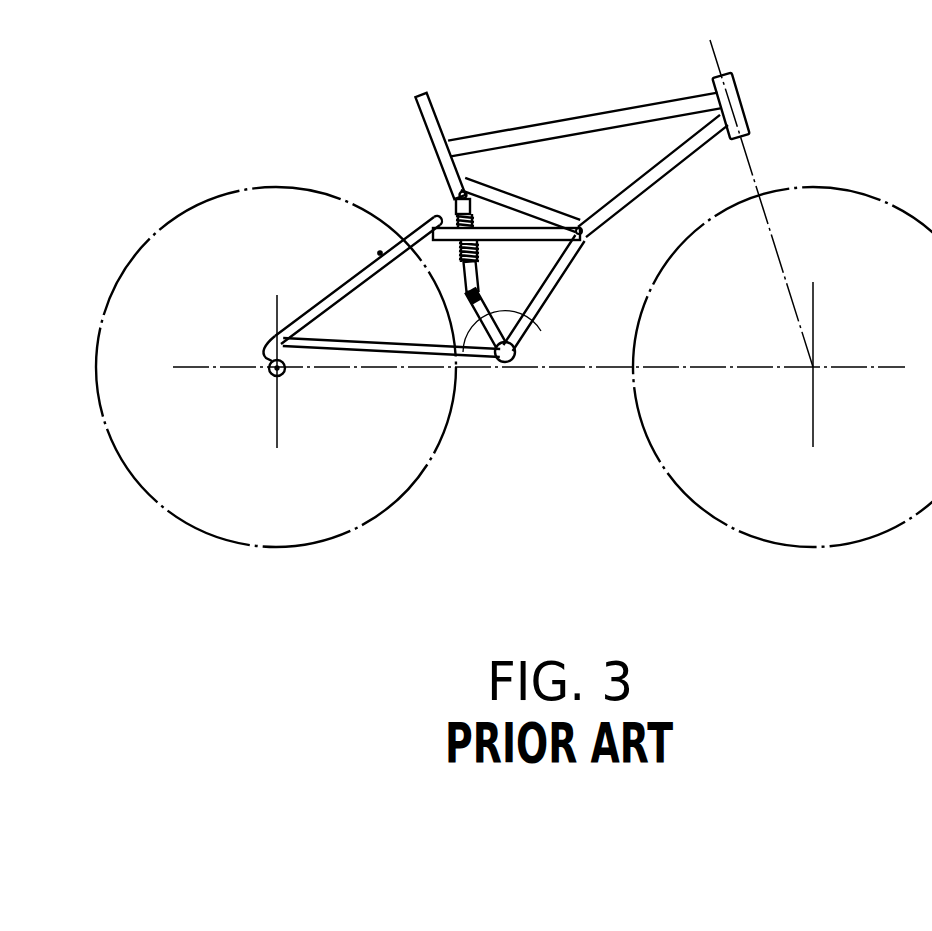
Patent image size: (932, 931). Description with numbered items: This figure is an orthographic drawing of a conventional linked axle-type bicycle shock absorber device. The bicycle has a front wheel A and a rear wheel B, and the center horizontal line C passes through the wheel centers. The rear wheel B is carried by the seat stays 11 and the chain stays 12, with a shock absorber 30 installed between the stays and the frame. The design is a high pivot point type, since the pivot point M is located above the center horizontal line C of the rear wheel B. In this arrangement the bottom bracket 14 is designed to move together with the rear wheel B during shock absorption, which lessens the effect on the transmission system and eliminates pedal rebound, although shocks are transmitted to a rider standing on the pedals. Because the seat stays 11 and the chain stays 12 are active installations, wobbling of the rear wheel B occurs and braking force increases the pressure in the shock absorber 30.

The seat stays 11 is at (347, 290).
The chain stays 12 is at (437, 353).
The bottom bracket 14 is at (510, 363).
The shock absorber 30 is at (440, 250).
The pivot point M is at (578, 220).
The front wheel A is at (833, 540).
The rear wheel B is at (202, 532).
The center horizontal line C is at (357, 370).